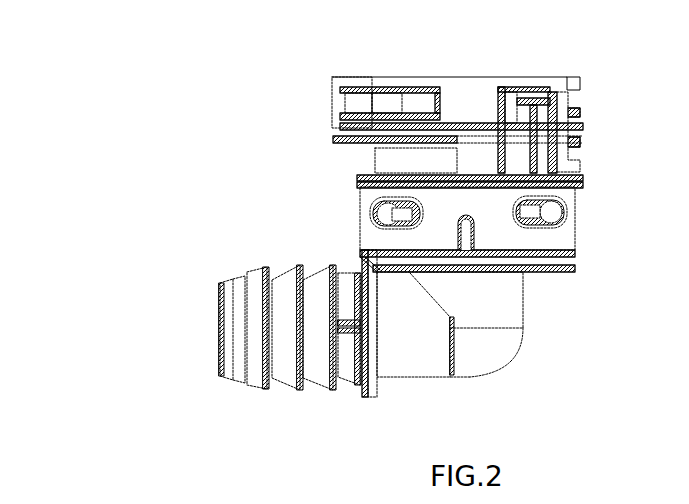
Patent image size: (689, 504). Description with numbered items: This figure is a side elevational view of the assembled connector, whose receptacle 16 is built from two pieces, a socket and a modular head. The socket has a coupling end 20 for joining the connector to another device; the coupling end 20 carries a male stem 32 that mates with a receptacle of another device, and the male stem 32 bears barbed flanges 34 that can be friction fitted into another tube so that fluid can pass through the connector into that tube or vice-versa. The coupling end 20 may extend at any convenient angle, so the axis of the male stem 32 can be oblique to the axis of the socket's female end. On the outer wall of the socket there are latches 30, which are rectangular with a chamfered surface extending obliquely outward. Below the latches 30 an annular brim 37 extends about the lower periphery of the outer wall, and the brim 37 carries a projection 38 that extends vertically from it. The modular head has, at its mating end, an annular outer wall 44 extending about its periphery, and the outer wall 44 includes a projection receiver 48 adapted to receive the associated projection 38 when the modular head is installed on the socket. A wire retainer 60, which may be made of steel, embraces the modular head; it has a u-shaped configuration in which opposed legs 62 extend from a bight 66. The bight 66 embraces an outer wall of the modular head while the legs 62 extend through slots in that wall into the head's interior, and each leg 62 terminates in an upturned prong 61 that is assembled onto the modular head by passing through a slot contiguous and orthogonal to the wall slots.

The receptacle 16 is at (205, 180).
The coupling end 20 is at (403, 360).
The latch 30 is at (402, 213).
The male stem 32 is at (228, 377).
The barbed flange 34 is at (292, 388).
The annular brim 37 is at (574, 260).
The projection 38 is at (467, 248).
The annular outer wall 44 is at (388, 200).
The projection receiver 48 is at (475, 232).
The wire retainer 60 is at (455, 132).
The upturned prong 61 is at (560, 112).
The leg 62 is at (480, 124).
The bight 66 is at (338, 131).